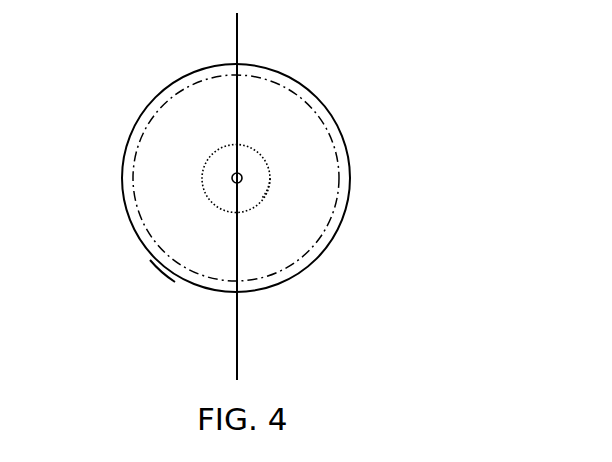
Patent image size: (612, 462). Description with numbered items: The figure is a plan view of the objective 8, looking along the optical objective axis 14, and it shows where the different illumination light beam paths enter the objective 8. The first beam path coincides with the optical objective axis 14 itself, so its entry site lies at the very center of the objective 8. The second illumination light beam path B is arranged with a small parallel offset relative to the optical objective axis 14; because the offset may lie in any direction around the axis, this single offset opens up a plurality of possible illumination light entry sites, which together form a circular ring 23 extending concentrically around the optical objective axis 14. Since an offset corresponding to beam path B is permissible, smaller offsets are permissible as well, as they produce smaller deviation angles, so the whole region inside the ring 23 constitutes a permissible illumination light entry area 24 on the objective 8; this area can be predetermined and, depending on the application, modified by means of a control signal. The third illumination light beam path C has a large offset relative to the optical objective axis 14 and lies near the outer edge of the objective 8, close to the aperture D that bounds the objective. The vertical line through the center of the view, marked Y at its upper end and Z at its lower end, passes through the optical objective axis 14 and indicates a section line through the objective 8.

The objective 8 is at (118, 178).
The optical objective axis 14 is at (247, 172).
The circular ring 23 is at (271, 168).
The permissible illumination light entry area 24 is at (245, 190).
The second illumination light beam path B is at (271, 187).
The third illumination light beam path C is at (337, 213).
The aperture D is at (163, 284).
The axis end Y is at (236, 22).
The axis end Z is at (236, 375).